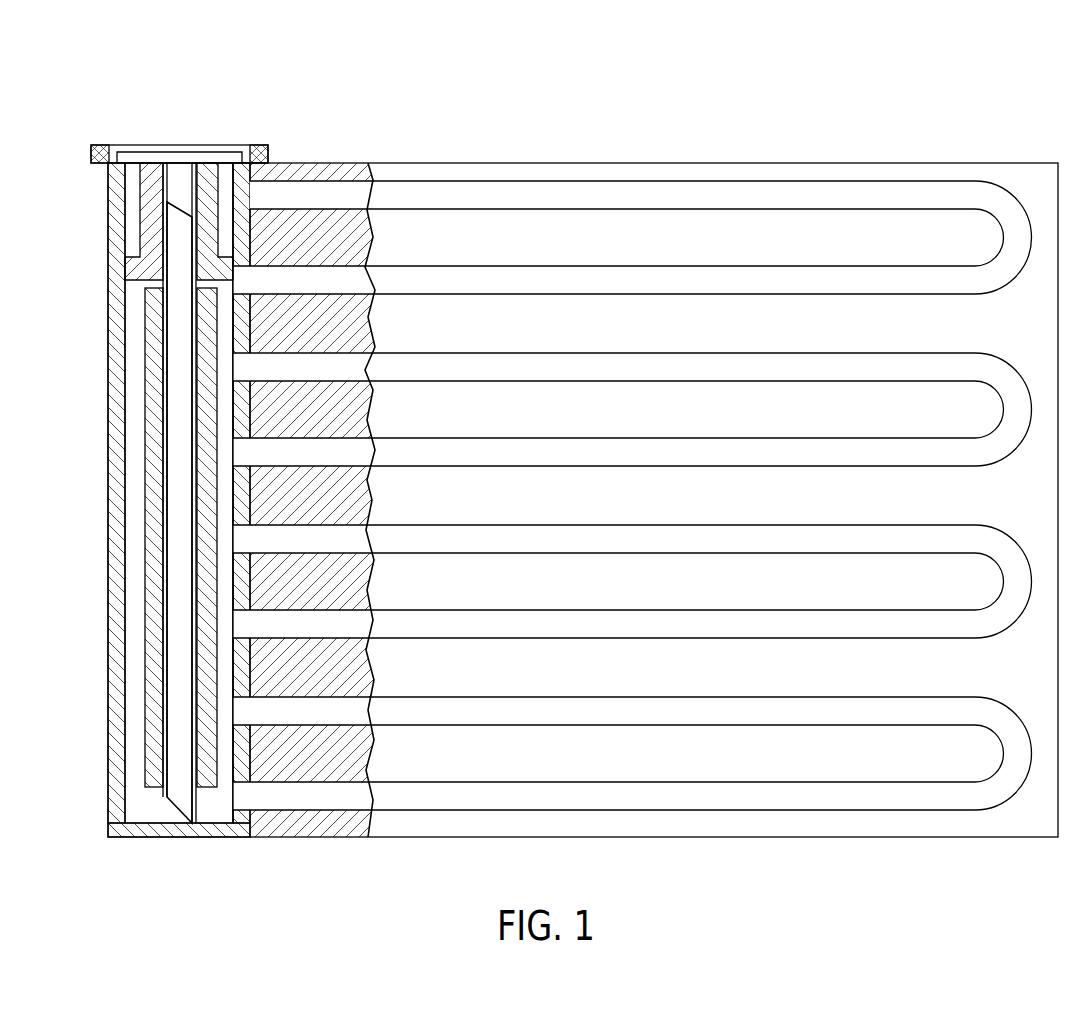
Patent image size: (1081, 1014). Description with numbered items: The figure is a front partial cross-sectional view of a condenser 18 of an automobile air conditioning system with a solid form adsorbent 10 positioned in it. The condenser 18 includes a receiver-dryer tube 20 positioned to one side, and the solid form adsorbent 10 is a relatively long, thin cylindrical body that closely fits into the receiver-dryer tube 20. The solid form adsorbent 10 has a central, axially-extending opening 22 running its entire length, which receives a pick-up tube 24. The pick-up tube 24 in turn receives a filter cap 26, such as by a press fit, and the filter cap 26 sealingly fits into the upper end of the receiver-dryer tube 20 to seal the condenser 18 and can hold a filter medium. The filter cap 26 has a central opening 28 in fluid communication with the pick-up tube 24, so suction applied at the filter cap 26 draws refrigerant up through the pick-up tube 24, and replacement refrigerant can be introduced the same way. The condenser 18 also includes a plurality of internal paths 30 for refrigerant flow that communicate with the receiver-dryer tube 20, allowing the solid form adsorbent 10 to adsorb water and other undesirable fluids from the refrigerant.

The solid form adsorbent 10 is at (143, 548).
The condenser 18 is at (583, 427).
The receiver-dryer tube 20 is at (227, 191).
The central, axially-extending opening 22 is at (176, 497).
The pick-up tube 24 is at (166, 302).
The filter cap 26 is at (140, 225).
The central opening 28 is at (176, 273).
The internal paths 30 is at (827, 190).